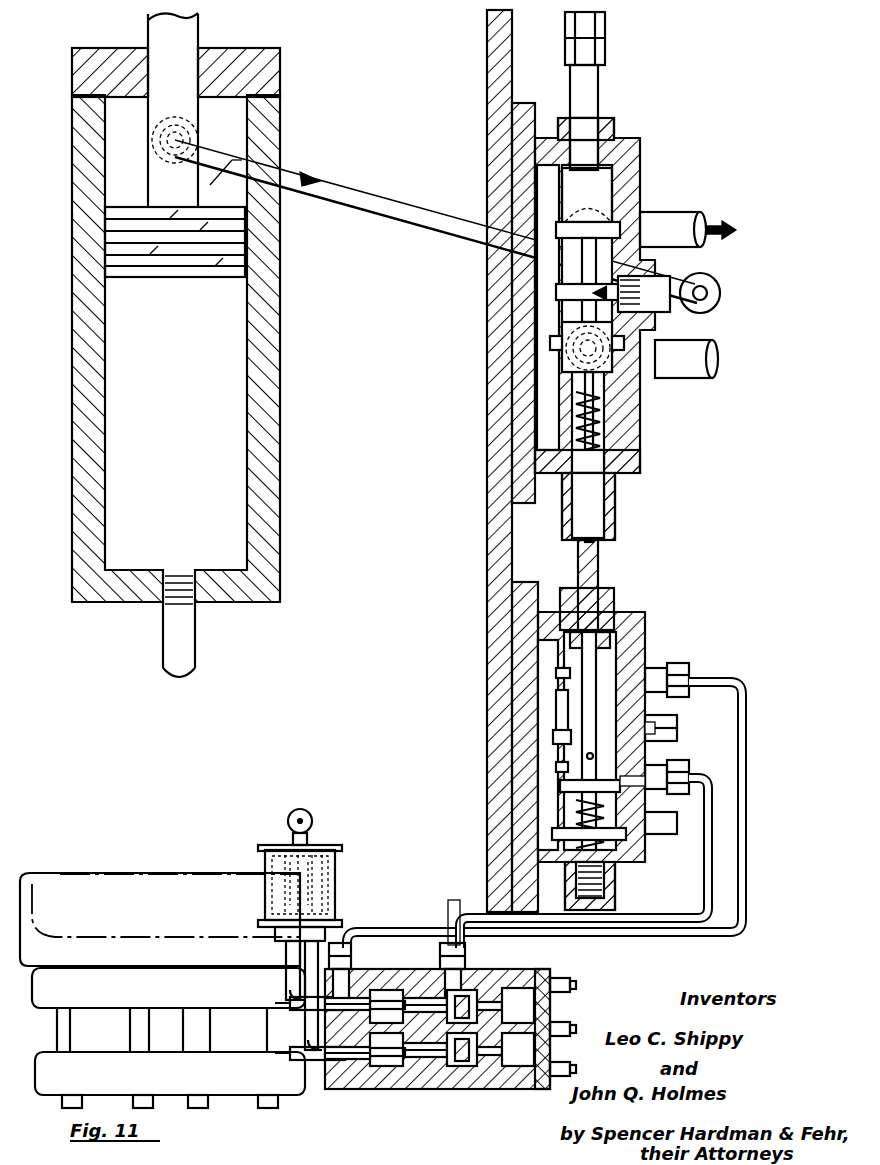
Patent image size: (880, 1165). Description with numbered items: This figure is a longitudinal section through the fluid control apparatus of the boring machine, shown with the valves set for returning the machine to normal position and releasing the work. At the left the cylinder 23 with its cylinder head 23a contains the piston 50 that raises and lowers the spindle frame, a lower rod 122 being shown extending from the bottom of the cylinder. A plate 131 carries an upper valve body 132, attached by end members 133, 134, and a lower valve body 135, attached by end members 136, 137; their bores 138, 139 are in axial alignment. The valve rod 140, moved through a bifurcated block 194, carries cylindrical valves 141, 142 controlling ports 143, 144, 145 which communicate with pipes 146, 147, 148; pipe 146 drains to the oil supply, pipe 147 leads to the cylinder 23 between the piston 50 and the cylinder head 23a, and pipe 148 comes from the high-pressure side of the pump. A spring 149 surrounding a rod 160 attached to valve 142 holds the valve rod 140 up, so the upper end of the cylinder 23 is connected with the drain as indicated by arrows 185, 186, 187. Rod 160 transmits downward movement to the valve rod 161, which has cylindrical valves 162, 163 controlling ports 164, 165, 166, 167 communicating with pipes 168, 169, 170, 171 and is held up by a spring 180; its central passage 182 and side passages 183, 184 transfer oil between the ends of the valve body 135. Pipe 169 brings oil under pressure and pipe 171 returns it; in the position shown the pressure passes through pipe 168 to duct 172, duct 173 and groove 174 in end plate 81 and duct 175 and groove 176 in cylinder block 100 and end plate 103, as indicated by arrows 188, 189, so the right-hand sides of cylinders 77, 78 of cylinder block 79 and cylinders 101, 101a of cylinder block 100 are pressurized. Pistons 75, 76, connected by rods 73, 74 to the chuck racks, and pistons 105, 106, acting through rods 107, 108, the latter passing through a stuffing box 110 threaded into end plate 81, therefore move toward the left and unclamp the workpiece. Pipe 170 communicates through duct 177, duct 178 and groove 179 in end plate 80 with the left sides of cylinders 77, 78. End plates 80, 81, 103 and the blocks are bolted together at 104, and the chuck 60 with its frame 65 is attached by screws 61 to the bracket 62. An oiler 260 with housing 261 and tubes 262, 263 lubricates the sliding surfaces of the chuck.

The cylinder 23 is at (279, 461).
The cylinder head 23a is at (278, 72).
The piston 50 is at (180, 282).
The piston rod 122 is at (185, 638).
The arrow 185 is at (292, 172).
The plate 131 is at (490, 481).
The valve body 132 is at (632, 186).
The end member 133 is at (632, 140).
The bifurcated block 194 is at (606, 45).
The valve rod 140 is at (597, 90).
The cylindrical valve 141 is at (612, 150).
The port 143 is at (560, 212).
The port 144 is at (560, 291).
The cylindrical valve 142 is at (562, 334).
The port 145 is at (556, 364).
The central bore 138 is at (580, 414).
The spring 149 is at (603, 432).
The end member 134 is at (641, 461).
The rod 160 is at (612, 498).
The valve rod 161 is at (599, 560).
The pipe 146 is at (666, 214).
The arrow 187 is at (706, 225).
The pipe 148 is at (688, 370).
The pipe 147 is at (716, 282).
The arrow 186 is at (712, 307).
The end member 136 is at (646, 628).
The valve body 135 is at (640, 652).
The side passage 183 is at (620, 626).
The cylindrical valve 162 is at (572, 674).
The port 164 is at (566, 690).
The central passage 182 is at (562, 710).
The port 165 is at (560, 736).
The cylindrical valve 163 is at (584, 758).
The side passage 184 is at (560, 770).
The port 166 is at (562, 784).
The bore 139 is at (574, 806).
The port 167 is at (560, 832).
The end member 137 is at (616, 903).
The pipe 168 is at (690, 672).
The pipe 169 is at (680, 727).
The arrow 188 is at (662, 735).
The pipe 170 is at (690, 776).
The spring 180 is at (640, 808).
The pipe 171 is at (682, 828).
The arrow 189 is at (730, 680).
The duct 173 is at (456, 945).
The duct 172 is at (454, 940).
The oiler housing 261 is at (268, 892).
The oiler 260 is at (362, 835).
The tube 262 is at (286, 866).
The tube 263 is at (312, 870).
The duct 177 is at (336, 945).
The duct 178 is at (346, 965).
The bracket 62 is at (28, 876).
The chuck 60 is at (226, 1088).
The screws 61 is at (198, 1106).
The chuck frame 65 is at (238, 1085).
The groove 179 is at (340, 1029).
The cylinder block 100 is at (466, 1090).
The piston 75 is at (386, 992).
The groove 174 is at (390, 1049).
The rod 107 is at (521, 1006).
The rod 108 is at (521, 1049).
The cylinder 77 is at (375, 988).
The piston 76 is at (388, 1090).
The piston 105 is at (492, 1000).
The duct 175 is at (520, 1000).
The piston 106 is at (520, 1090).
The end plate 103 is at (546, 1092).
The cylinder 101 is at (576, 1005).
The groove 176 is at (562, 978).
The bolts 104 is at (572, 1028).
The cylinder 101a is at (566, 1072).
The rod 73 is at (348, 968).
The cylinder block 79 is at (442, 968).
The end plate 80 is at (330, 1080).
The cylinder 78 is at (346, 1086).
The rod 74 is at (370, 1090).
The end plate 81 is at (450, 1090).
The stuffing box 110 is at (470, 1090).